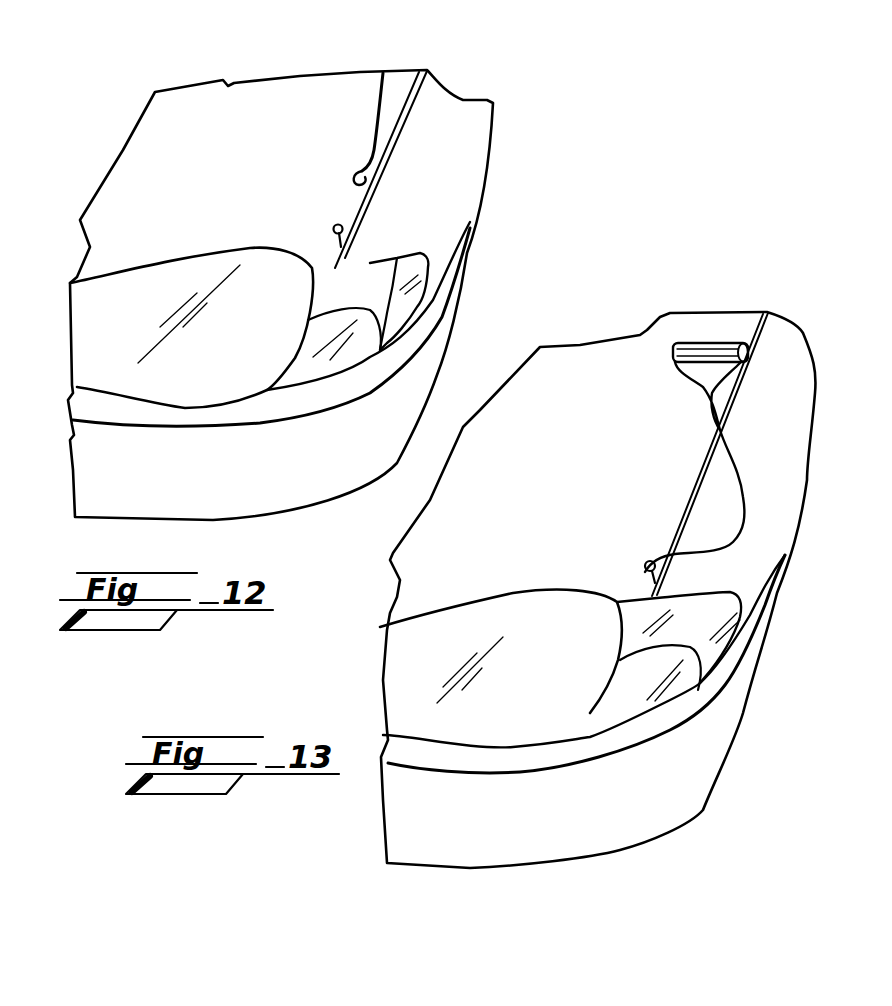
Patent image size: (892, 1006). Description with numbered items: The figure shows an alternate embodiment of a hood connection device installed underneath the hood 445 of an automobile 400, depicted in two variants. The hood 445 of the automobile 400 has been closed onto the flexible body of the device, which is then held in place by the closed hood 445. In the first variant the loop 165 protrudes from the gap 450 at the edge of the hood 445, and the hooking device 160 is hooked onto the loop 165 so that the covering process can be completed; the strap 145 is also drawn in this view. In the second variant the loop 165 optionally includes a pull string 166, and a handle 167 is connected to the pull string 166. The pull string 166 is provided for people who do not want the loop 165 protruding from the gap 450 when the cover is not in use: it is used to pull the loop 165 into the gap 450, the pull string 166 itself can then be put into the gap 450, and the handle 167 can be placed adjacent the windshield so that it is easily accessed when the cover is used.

In FIG. 12, the automobile 400 is at (252, 62).
In FIG. 13, the automobile 400 is at (602, 297).
In FIG. 12, the hood 445 is at (167, 187).
In FIG. 13, the hood 445 is at (577, 393).
In FIG. 12, the gap 450 is at (397, 145).
In FIG. 13, the gap 450 is at (747, 387).
In FIG. 12, the strap 145 is at (380, 130).
In FIG. 13, the strap 145 is at (710, 454).
In FIG. 12, the hooking device 160 is at (353, 170).
In FIG. 12, the loop 165 is at (333, 235).
In FIG. 13, the loop 165 is at (643, 565).
In FIG. 13, the pull string 166 is at (717, 427).
In FIG. 13, the handle 167 is at (710, 347).